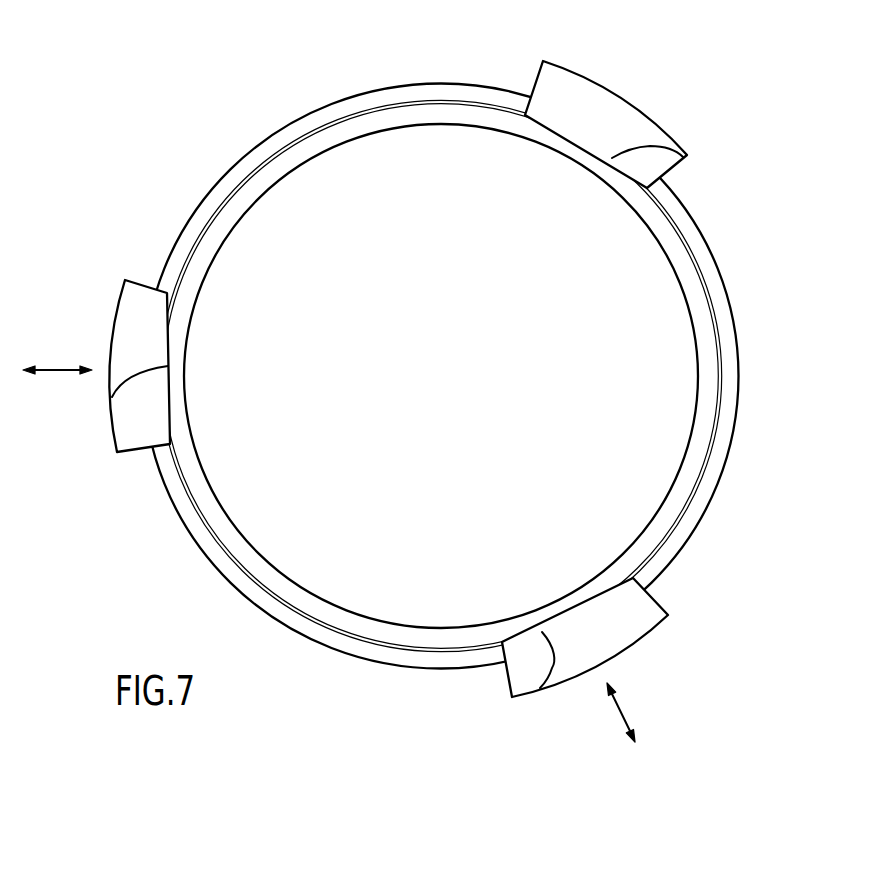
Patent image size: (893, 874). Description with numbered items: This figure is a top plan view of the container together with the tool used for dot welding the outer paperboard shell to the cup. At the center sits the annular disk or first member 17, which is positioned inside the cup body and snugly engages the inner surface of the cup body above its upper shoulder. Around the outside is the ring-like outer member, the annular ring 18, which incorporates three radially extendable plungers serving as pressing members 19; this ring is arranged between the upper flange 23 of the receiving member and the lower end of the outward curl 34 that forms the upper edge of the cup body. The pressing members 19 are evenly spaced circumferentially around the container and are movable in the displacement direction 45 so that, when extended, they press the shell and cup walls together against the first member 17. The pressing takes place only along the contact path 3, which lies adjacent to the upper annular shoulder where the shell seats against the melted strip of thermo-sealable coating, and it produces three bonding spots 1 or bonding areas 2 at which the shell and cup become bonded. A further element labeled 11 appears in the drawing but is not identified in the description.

The bonding spot 1 is at (415, 406).
The bonding area 2 is at (415, 406).
The contact path 3 is at (467, 332).
The fastening device 11 is at (675, 113).
The annular disk 17 is at (413, 158).
The annular ring 18 is at (623, 668).
The pressing members 19 is at (627, 630).
The upper flange 23 is at (257, 163).
The outward curl 34 is at (707, 353).
The displacement direction 45 is at (617, 703).